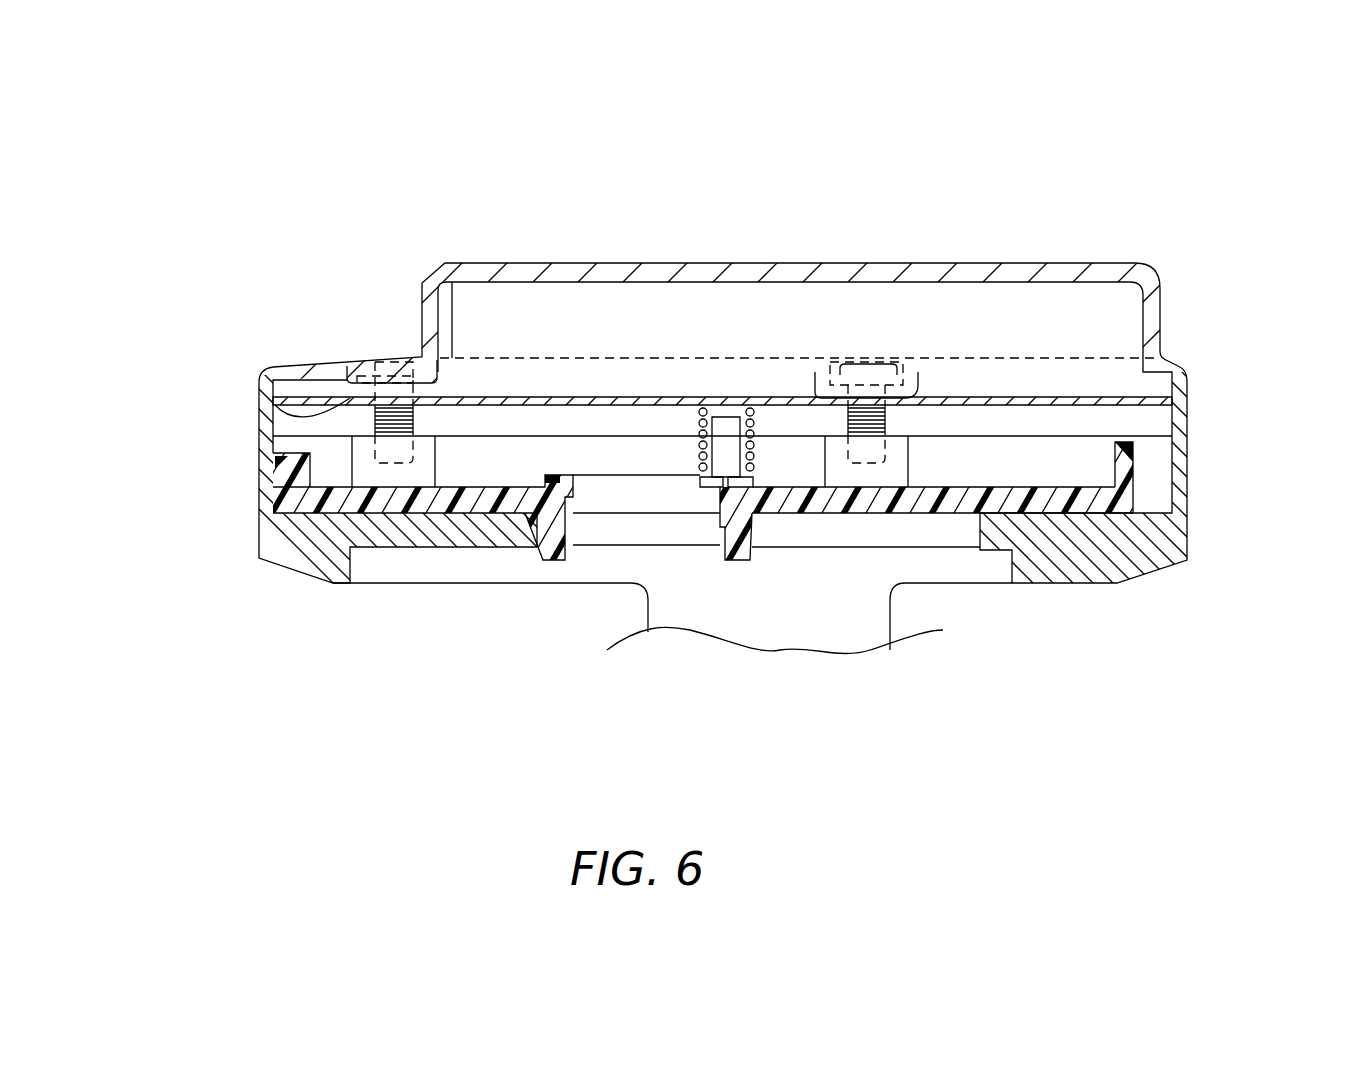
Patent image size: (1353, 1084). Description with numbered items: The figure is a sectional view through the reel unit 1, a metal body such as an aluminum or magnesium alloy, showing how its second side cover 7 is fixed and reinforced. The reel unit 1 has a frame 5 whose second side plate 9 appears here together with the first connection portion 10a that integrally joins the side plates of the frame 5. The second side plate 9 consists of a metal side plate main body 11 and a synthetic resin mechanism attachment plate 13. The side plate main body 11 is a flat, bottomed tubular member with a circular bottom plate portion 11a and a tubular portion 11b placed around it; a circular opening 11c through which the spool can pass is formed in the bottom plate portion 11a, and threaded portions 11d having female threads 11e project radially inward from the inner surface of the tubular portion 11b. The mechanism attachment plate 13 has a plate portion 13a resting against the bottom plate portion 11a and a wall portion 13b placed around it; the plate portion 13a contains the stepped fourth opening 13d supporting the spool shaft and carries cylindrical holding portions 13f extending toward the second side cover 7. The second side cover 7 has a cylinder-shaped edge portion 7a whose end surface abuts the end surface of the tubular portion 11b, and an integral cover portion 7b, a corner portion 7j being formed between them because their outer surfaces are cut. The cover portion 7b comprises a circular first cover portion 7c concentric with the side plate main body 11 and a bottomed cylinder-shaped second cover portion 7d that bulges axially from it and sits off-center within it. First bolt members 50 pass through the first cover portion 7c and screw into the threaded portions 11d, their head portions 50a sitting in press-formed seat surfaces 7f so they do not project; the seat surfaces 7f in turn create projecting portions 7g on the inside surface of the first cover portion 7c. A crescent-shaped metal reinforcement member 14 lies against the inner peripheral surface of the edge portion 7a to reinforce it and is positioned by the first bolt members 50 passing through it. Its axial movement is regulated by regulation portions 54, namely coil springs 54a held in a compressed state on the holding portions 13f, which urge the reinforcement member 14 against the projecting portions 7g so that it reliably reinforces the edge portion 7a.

The reel unit 1 is at (228, 455).
The frame 5 is at (283, 603).
The second side cover 7 is at (716, 276).
The edge portion 7a is at (1180, 412).
The cover portion 7b is at (535, 245).
The first cover portion 7c is at (330, 350).
The second cover portion 7d is at (995, 263).
The seat surfaces 7f is at (363, 375).
The projecting portions 7g is at (268, 425).
The corner portion 7j is at (265, 370).
The second side plate 9 is at (133, 511).
The first connection portion 10a is at (878, 628).
The side plate main body 11 is at (736, 478).
The bottom plate portion 11a is at (995, 540).
The tubular portion 11b is at (1180, 480).
The opening 11c is at (390, 513).
The threaded portions 11d is at (427, 425).
The female threads 11e is at (420, 465).
The mechanism attachment plate 13 is at (686, 463).
The plate portion 13a is at (1015, 470).
The wall portion 13b is at (292, 471).
The fourth opening 13d is at (590, 560).
The holding portions 13f is at (725, 423).
The reinforcement member 14 is at (323, 385).
The first bolt members 50 is at (405, 352).
The head portions 50a is at (380, 362).
The regulation portions 54 is at (700, 462).
The coil springs 54a is at (752, 462).